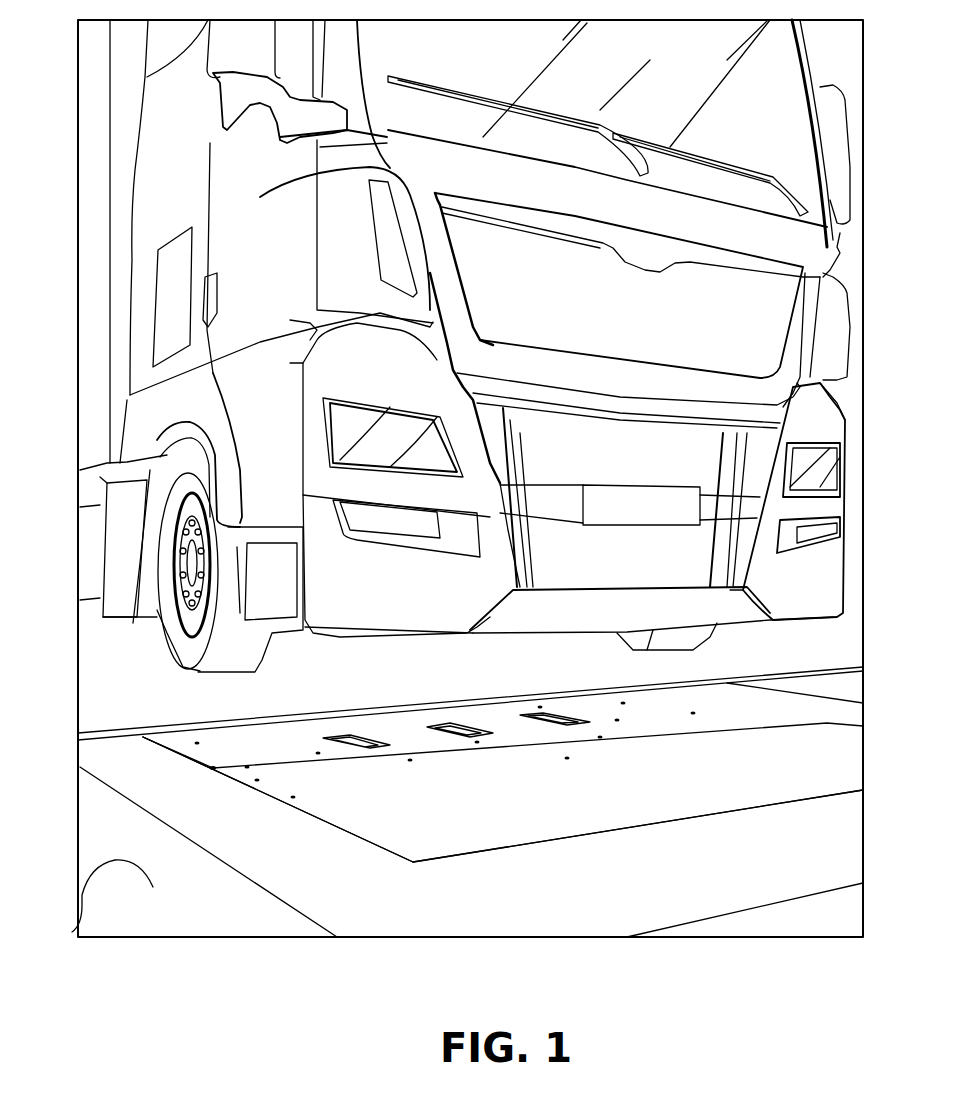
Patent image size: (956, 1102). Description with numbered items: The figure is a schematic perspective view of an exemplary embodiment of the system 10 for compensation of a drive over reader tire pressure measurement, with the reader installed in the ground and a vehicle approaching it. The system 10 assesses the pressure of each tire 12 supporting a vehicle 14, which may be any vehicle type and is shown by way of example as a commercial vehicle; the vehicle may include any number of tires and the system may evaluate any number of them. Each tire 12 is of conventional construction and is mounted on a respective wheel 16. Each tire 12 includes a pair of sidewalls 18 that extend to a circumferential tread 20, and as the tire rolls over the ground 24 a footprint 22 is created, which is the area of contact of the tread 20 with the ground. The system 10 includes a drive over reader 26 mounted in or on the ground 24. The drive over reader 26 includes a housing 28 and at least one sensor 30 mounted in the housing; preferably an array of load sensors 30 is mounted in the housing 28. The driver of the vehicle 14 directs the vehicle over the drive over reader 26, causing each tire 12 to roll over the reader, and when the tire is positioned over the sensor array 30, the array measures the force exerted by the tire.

The system for compensation of a drive over reader tire pressure measurement 10 is at (228, 797).
The tire 12 is at (163, 650).
The vehicle 14 is at (833, 618).
The wheel 16 is at (178, 566).
The sidewalls 18 is at (187, 470).
The tread 20 is at (230, 660).
The footprint 22 is at (205, 628).
The ground 24 is at (72, 932).
The drive over reader 26 is at (317, 822).
The housing 28 is at (213, 768).
The sensor 30 is at (513, 792).